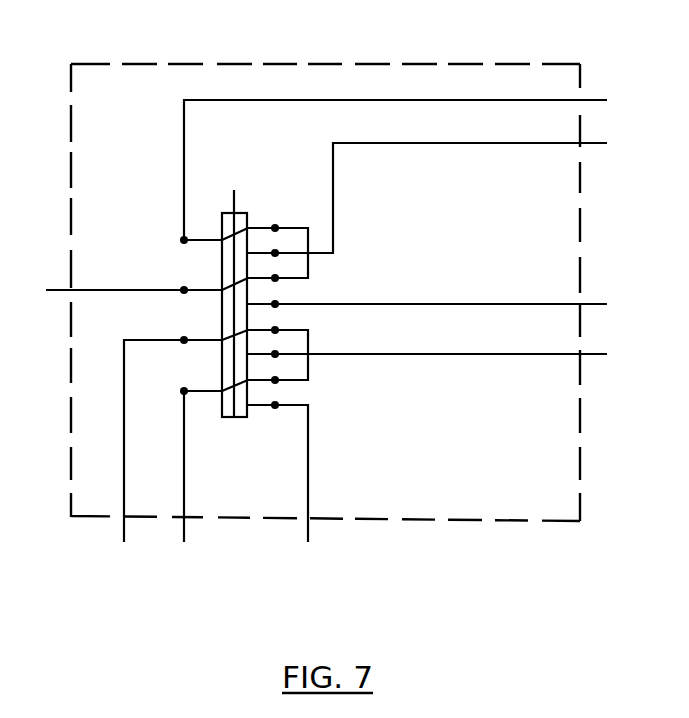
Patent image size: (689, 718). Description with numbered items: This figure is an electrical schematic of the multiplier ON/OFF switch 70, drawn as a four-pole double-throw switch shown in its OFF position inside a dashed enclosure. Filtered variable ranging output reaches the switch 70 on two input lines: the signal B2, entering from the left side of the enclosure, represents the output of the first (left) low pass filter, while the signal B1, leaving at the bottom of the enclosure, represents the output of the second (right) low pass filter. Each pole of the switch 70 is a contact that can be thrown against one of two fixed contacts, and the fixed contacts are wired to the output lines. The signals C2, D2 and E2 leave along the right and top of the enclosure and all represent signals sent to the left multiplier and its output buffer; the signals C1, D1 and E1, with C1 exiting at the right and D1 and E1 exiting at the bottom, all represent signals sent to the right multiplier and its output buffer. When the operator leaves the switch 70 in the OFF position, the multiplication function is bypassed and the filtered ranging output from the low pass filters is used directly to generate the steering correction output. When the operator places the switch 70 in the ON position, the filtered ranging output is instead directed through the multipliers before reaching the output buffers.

The switch 70 is at (327, 277).
The signal to the left multiplier and output buffer E2 is at (397, 159).
The signal to the left multiplier and output buffer D2 is at (428, 185).
The signal to the left multiplier and output buffer C2 is at (429, 294).
The signal to the right multiplier and output buffer C1 is at (429, 345).
The signal from the first (left) low pass filter B2 is at (132, 276).
The signal from the second (right) low pass filter B1 is at (156, 442).
The signal to the right multiplier and output buffer E1 is at (198, 468).
The signal to the right multiplier and output buffer D1 is at (293, 475).